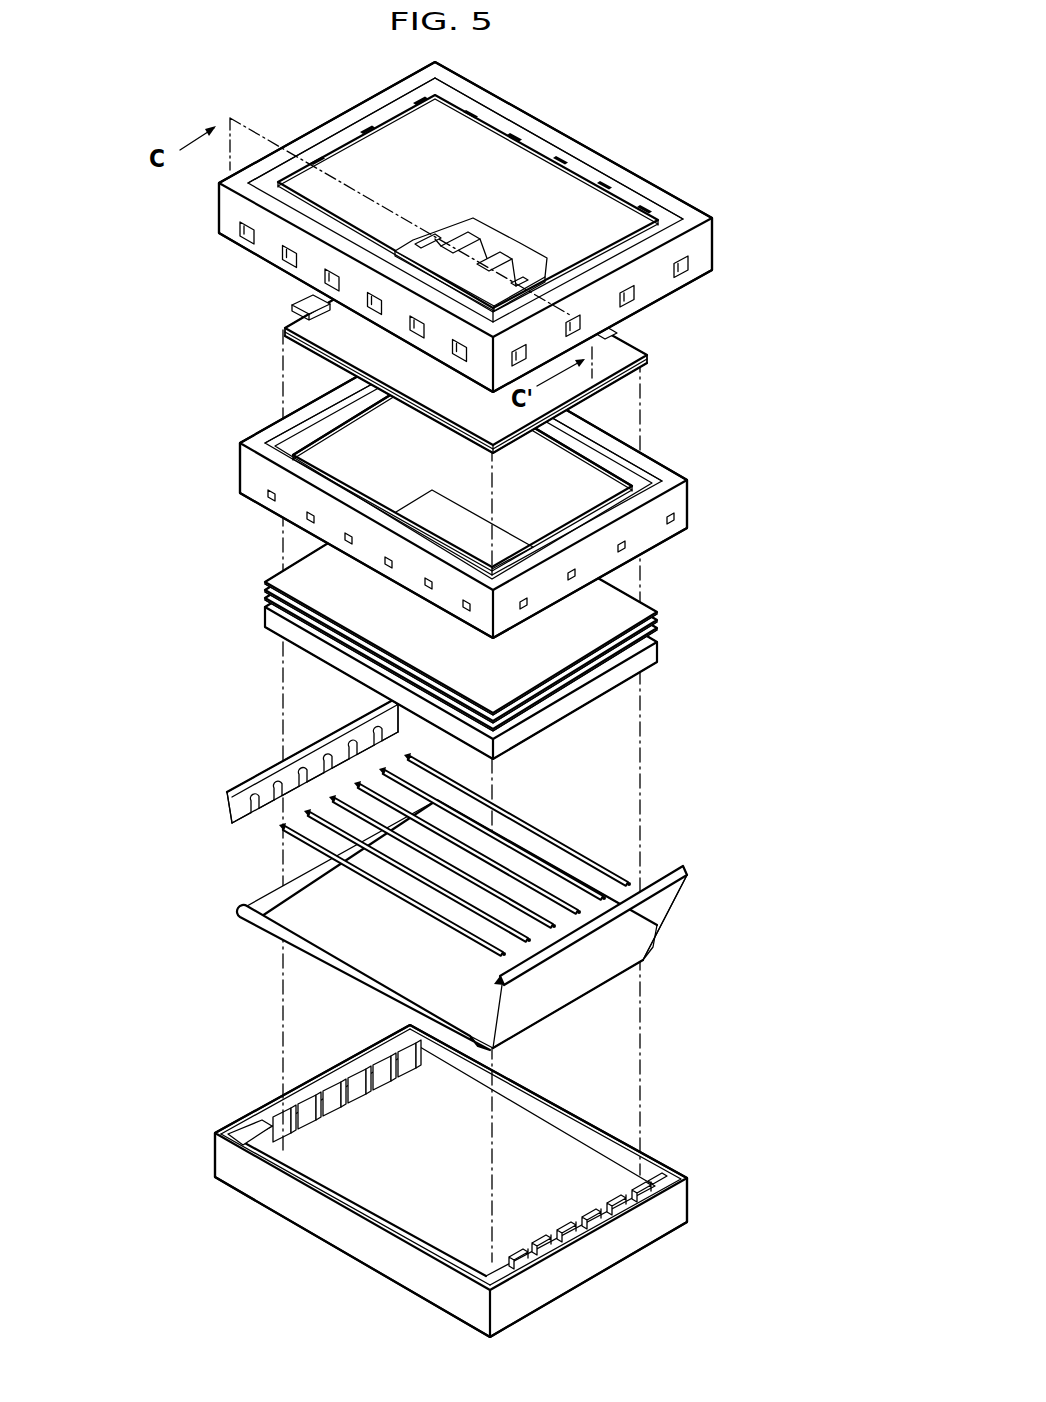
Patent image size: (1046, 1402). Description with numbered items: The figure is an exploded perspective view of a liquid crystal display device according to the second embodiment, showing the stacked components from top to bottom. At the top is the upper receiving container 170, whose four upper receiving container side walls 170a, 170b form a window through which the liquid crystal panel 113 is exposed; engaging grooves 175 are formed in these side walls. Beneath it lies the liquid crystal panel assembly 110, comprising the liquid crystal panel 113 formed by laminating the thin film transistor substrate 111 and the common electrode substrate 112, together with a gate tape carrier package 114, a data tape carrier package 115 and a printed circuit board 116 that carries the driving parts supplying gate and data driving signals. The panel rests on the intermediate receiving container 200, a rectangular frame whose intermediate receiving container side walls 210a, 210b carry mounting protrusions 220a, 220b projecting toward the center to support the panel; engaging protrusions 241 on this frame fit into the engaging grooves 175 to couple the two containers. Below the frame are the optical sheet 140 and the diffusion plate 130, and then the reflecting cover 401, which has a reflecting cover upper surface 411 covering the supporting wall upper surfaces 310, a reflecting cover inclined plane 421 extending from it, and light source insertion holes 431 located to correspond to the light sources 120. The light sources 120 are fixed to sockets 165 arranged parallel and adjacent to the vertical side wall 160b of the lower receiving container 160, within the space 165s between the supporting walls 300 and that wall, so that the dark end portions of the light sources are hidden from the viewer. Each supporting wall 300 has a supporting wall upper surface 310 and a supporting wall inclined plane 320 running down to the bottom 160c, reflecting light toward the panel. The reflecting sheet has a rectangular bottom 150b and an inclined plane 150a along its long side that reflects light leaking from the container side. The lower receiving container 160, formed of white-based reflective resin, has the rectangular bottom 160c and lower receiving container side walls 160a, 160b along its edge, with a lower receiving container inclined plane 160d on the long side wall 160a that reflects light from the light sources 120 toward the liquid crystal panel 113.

The liquid crystal panel assembly 110 is at (500, 345).
The thin film transistor substrate 111 is at (622, 345).
The common electrode substrate 112 is at (620, 370).
The liquid crystal panel 113 is at (547, 381).
The gate tape carrier package 114 is at (298, 300).
The data tape carrier package 115 is at (490, 265).
The printed circuit board 116 is at (464, 238).
The light sources 120 is at (553, 842).
The diffusion plate 130 is at (662, 648).
The optical sheet 140 is at (669, 609).
The inclined plane 150a is at (633, 933).
The bottom 150b is at (347, 940).
The lower receiving container 160 is at (398, 1167).
The lower receiving container side wall 160a is at (520, 1088).
The vertical side wall 160b is at (343, 1057).
The bottom 160c is at (323, 1178).
The lower receiving container inclined plane 160d is at (567, 1137).
The sockets 165 is at (643, 1197).
The space 165s is at (662, 1168).
The upper receiving container 170 is at (503, 223).
The upper receiving container side wall 170a is at (540, 132).
The upper receiving container side wall 170b is at (338, 120).
The engaging grooves 175 is at (695, 256).
The intermediate receiving container 200 is at (493, 485).
The intermediate receiving container side wall 210a is at (607, 440).
The intermediate receiving container side wall 210b is at (328, 400).
The mounting protrusion 220a is at (617, 470).
The mounting protrusion 220b is at (312, 437).
The engaging protrusions 241 is at (678, 508).
The supporting walls 300 is at (241, 1092).
The supporting wall upper surface 310 is at (253, 1133).
The supporting wall inclined plane 320 is at (262, 1145).
The reflecting cover 401 is at (246, 768).
The reflecting cover upper surface 411 is at (303, 753).
The reflecting cover inclined plane 421 is at (268, 795).
The light source insertion holes 431 is at (152, 718).